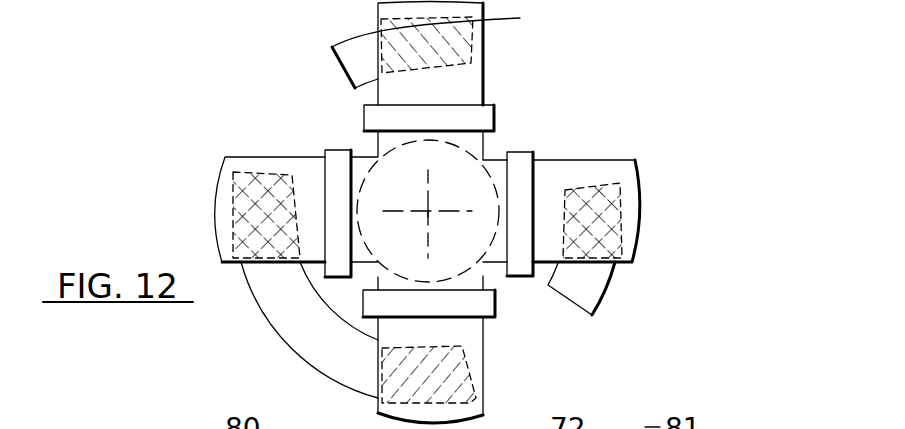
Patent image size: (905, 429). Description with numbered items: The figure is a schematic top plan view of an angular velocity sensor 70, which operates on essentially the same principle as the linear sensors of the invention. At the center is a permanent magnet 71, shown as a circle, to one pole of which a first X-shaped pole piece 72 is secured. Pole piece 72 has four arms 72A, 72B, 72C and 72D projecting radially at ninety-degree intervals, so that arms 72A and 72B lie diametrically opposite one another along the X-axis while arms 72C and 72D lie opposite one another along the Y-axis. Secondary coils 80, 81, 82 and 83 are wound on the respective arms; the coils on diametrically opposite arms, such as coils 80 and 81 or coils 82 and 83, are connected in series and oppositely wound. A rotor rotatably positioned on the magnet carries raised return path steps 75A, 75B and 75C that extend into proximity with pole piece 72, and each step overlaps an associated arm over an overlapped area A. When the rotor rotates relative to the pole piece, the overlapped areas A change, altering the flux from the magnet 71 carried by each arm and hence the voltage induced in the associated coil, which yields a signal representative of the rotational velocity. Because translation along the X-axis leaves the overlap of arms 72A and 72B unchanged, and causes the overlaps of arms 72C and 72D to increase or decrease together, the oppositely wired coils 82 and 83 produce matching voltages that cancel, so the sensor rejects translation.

The angular velocity sensor 70 is at (183, 218).
The permanent magnet 71 is at (462, 173).
The first X-shaped pole piece 72 is at (372, 150).
The arm 72A is at (232, 168).
The arm 72B is at (577, 160).
The arm 72C is at (487, 62).
The arm 72D is at (485, 373).
The raised return path step 75A is at (322, 342).
The raised return path step 75B is at (347, 55).
The raised return path step 75C is at (593, 282).
The secondary coil 80 is at (343, 268).
The secondary coil 81 is at (522, 185).
The secondary coil 82 is at (482, 120).
The secondary coil 83 is at (470, 303).
The overlapped area A is at (438, 26).